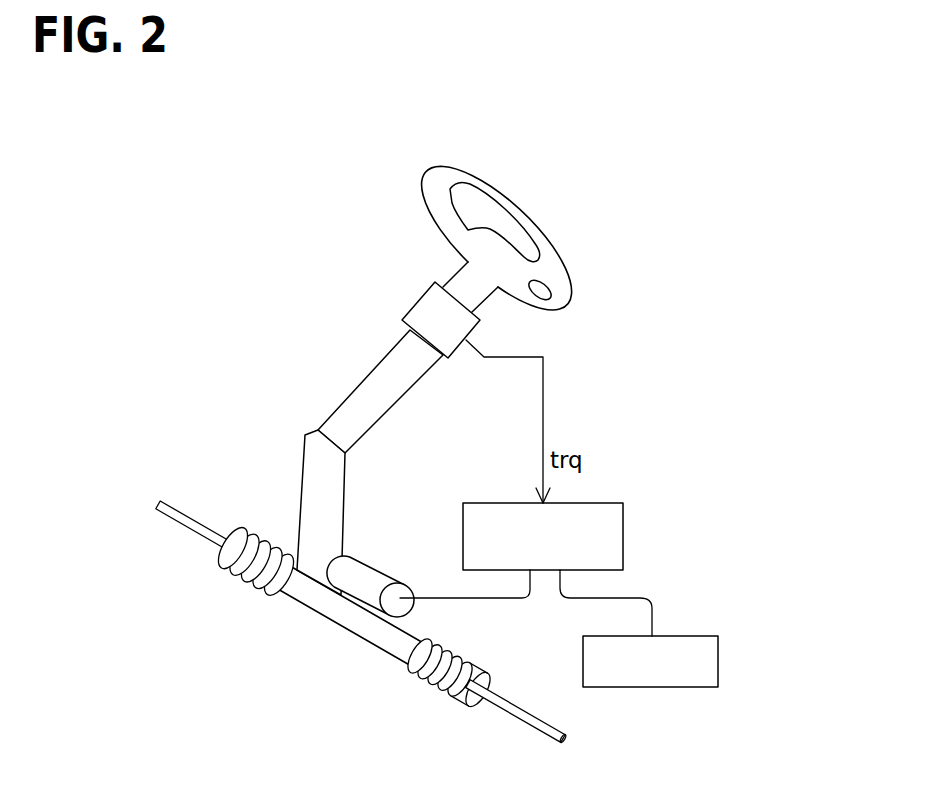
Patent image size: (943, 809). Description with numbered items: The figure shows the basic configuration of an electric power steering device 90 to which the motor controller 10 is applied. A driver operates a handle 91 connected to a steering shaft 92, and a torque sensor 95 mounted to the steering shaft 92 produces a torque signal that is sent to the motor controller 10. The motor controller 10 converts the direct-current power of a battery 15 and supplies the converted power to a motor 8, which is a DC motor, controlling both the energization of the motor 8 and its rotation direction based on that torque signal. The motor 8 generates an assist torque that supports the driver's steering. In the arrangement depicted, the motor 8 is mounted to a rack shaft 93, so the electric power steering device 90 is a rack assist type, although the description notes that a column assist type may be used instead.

The motor 8 is at (360, 578).
The motor controller 10 is at (510, 503).
The battery 15 is at (719, 656).
The electric power steering device 90 is at (490, 443).
The handle 91 is at (557, 272).
The steering shaft 92 is at (387, 368).
The rack shaft 93 is at (338, 608).
The torque sensor 95 is at (430, 318).